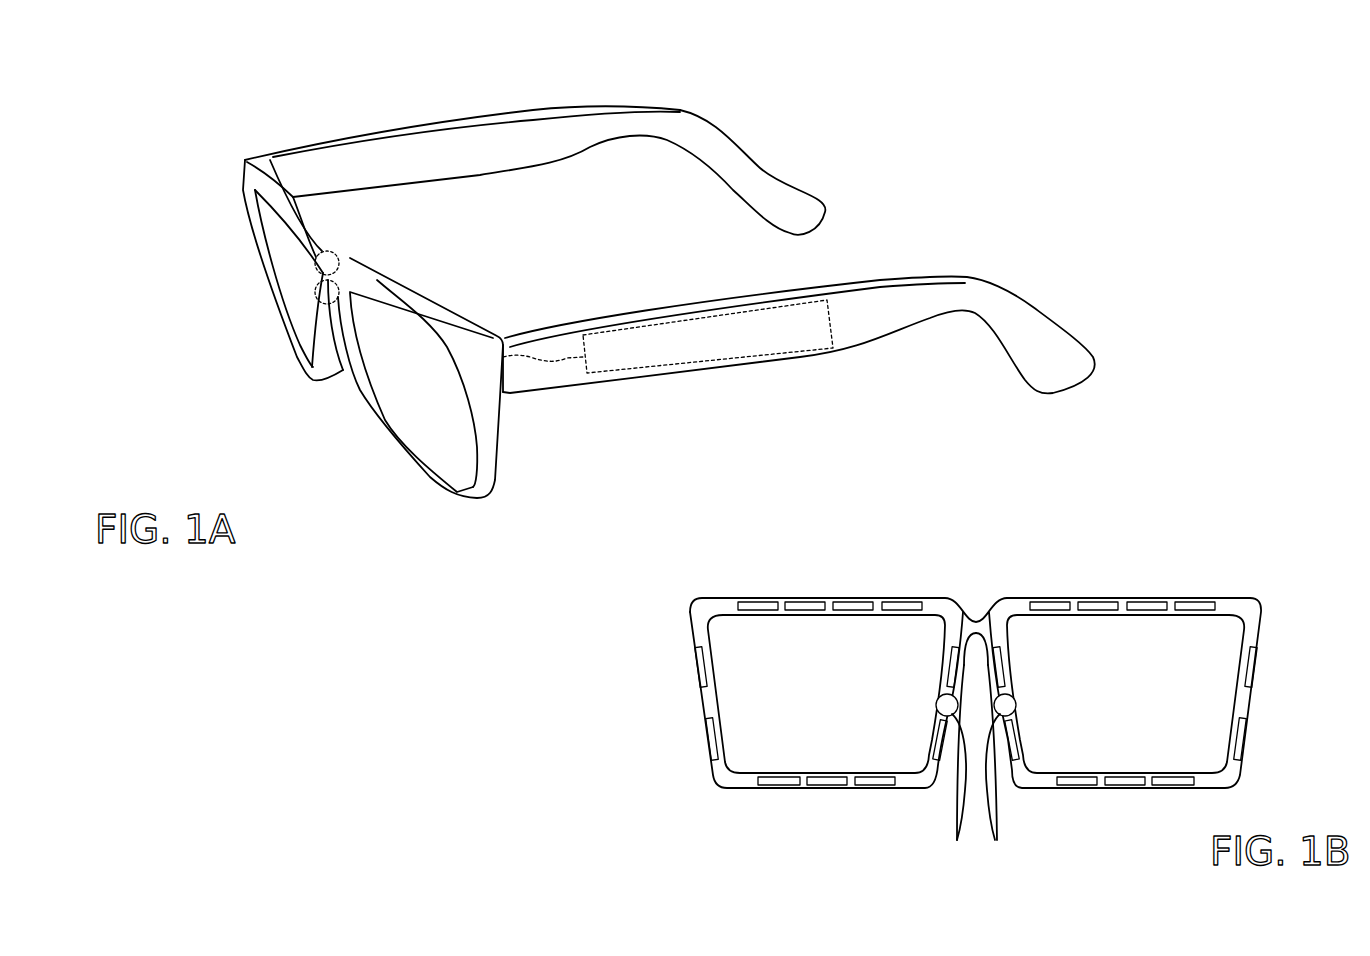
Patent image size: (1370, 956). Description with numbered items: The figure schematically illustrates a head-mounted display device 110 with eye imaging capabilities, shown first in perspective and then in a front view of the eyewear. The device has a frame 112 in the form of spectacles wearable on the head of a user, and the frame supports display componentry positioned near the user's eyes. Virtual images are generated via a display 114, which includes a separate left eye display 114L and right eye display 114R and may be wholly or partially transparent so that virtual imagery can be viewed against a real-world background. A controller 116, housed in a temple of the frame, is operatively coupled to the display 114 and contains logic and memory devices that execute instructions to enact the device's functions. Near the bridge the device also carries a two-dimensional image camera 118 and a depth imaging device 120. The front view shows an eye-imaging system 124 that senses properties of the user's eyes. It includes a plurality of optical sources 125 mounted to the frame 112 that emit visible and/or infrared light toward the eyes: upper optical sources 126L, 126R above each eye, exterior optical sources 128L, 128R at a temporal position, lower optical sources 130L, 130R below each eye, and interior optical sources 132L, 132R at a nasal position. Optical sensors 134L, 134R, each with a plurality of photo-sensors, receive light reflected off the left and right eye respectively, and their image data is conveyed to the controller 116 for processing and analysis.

In FIG. 1A, the head-mounted display device 110 is at (226, 114).
In FIG. 1B, the head-mounted display device 110 is at (681, 519).
In FIG. 1A, the frame 112 is at (535, 170).
In FIG. 1B, the frame 112 is at (690, 608).
In FIG. 1A, the display 114 is at (252, 349).
In FIG. 1A, the left eye display 114L is at (426, 445).
In FIG. 1B, the left eye display 114L is at (826, 694).
In FIG. 1A, the right eye display 114R is at (297, 296).
In FIG. 1B, the right eye display 114R is at (1125, 694).
In FIG. 1A, the controller 116 is at (799, 335).
In FIG. 1A, the two-dimensional image camera 118 is at (325, 258).
In FIG. 1A, the depth imaging device 120 is at (327, 292).
In FIG. 1B, the eye-imaging system 124 is at (1128, 509).
In FIG. 1B, the optical sources 125 is at (1035, 563).
In FIG. 1B, the upper optical source 126L is at (894, 597).
In FIG. 1B, the upper optical source 126R is at (1189, 597).
In FIG. 1B, the exterior optical source 128L is at (682, 663).
In FIG. 1B, the exterior optical source 128R is at (1258, 666).
In FIG. 1B, the lower optical source 130L is at (780, 796).
In FIG. 1B, the lower optical source 130R is at (1177, 797).
In FIG. 1B, the interior optical source 132L is at (934, 661).
In FIG. 1B, the interior optical source 132R is at (1017, 662).
In FIG. 1B, the optical sensor 134L is at (953, 747).
In FIG. 1B, the optical sensor 134R is at (1005, 747).